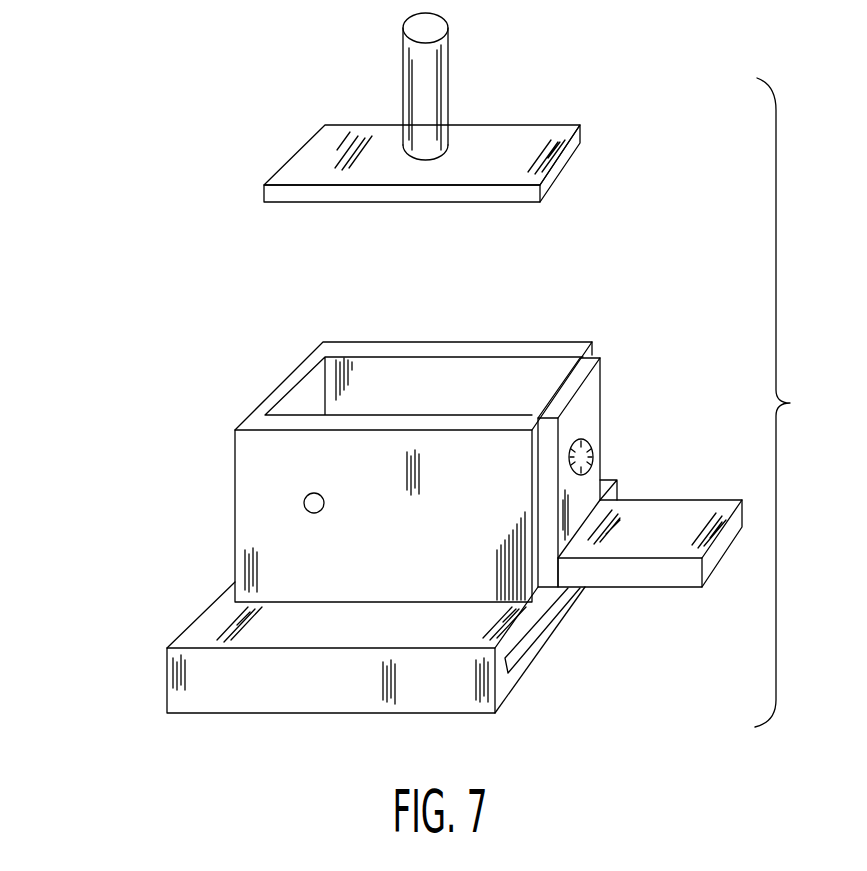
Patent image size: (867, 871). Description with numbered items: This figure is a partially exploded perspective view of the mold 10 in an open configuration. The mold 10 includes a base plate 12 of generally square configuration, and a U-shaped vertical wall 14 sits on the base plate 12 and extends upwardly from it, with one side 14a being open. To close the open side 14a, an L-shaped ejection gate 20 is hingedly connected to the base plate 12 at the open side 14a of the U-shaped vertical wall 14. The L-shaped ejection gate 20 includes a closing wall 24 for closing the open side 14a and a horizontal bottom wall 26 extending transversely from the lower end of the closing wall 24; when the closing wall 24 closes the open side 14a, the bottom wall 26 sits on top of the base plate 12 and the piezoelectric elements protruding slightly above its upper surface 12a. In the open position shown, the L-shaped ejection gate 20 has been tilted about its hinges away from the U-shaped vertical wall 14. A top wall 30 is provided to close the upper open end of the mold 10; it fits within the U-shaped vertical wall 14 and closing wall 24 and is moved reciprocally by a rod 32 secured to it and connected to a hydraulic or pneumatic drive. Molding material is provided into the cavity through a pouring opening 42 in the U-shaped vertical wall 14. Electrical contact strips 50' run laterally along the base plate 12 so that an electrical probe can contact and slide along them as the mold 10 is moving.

The mold 10 is at (186, 250).
The base plate 12 is at (342, 651).
The upper surface of base plate 12a is at (203, 623).
The U-shaped vertical wall 14 is at (390, 439).
The open side 14a is at (592, 352).
The L-shaped ejection gate 20 is at (642, 446).
The closing wall 24 is at (700, 512).
The horizontal bottom wall 26 is at (594, 388).
The top wall 30 is at (305, 158).
The rod 32 is at (403, 48).
The pouring opening 42 is at (305, 508).
The electrical contact strips 50' is at (560, 639).